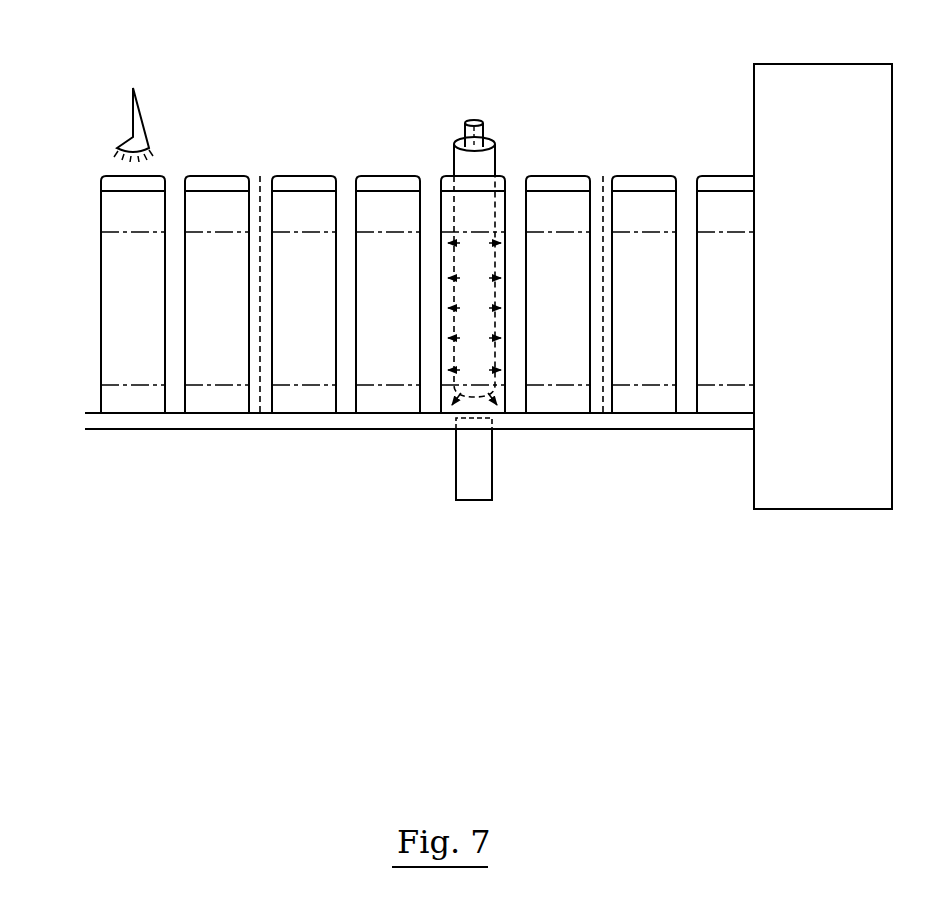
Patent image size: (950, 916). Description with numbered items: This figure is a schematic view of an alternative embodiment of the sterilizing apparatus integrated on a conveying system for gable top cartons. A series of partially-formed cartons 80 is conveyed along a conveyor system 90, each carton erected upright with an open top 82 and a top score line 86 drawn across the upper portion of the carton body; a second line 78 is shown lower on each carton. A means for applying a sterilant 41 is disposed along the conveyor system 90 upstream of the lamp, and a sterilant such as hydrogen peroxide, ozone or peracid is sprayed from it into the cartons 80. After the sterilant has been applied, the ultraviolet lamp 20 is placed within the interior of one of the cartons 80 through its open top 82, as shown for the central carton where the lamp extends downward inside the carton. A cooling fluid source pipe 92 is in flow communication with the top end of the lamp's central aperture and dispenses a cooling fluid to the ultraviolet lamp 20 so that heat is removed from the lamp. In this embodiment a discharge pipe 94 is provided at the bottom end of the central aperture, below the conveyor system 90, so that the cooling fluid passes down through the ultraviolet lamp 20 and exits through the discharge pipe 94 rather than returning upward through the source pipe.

The ultraviolet lamp 20 is at (500, 128).
The means for applying a sterilant 41 is at (118, 100).
The lower fill level line 78 is at (405, 385).
The partially-formed cartons 80 is at (303, 205).
The open top 82 is at (302, 176).
The top score line 86 is at (473, 232).
The conveyor system 90 is at (204, 441).
The cooling fluid source pipe 92 is at (477, 118).
The discharge pipe 94 is at (492, 468).